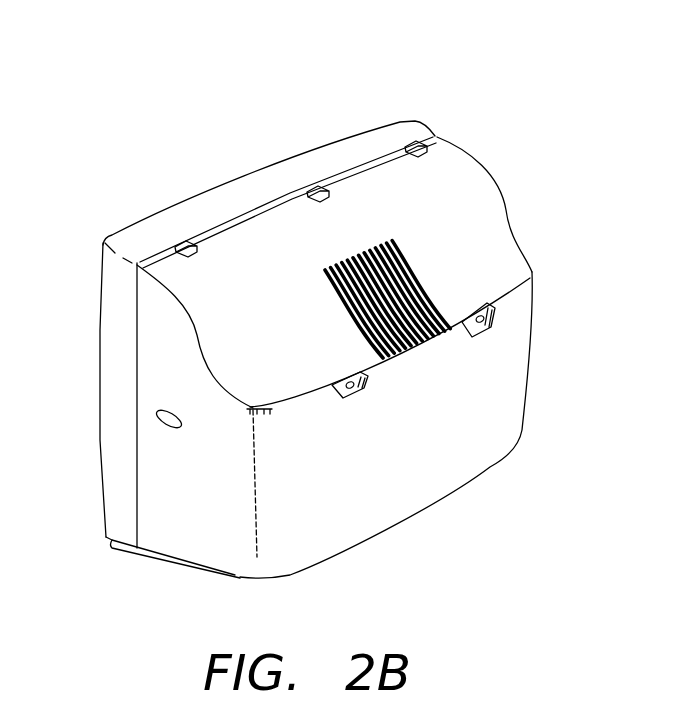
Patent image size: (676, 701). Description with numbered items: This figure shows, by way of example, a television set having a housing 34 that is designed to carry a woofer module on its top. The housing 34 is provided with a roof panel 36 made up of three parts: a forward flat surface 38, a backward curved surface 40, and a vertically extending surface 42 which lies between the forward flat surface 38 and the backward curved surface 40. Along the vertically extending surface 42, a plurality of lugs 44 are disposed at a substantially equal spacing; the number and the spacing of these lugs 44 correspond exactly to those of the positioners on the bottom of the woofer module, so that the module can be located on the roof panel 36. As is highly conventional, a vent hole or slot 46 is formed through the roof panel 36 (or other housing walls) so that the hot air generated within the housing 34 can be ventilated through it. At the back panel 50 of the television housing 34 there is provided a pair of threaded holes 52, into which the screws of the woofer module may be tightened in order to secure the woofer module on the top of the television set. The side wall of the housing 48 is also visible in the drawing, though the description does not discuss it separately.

The housing 34 is at (492, 150).
The roof panel 36 is at (380, 55).
The forward flat surface 38 is at (370, 147).
The backward curved surface 40 is at (358, 180).
The vertically extending surface 42 is at (343, 178).
The lugs 44 is at (313, 190).
The vent hole or slot 46 is at (398, 275).
The side wall 48 is at (167, 503).
The back panel 50 is at (493, 425).
The threaded holes 52 is at (367, 390).